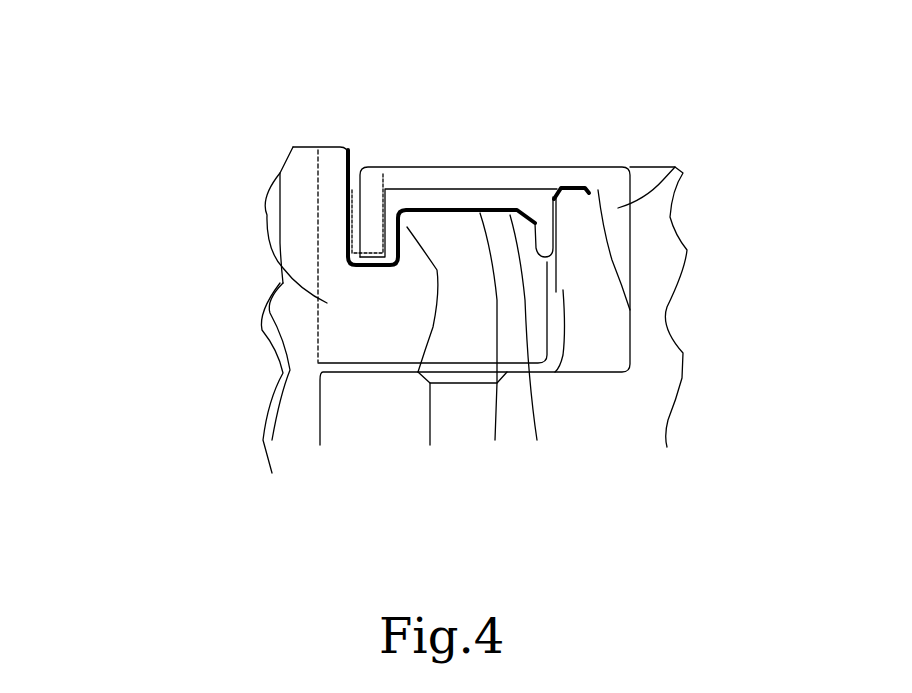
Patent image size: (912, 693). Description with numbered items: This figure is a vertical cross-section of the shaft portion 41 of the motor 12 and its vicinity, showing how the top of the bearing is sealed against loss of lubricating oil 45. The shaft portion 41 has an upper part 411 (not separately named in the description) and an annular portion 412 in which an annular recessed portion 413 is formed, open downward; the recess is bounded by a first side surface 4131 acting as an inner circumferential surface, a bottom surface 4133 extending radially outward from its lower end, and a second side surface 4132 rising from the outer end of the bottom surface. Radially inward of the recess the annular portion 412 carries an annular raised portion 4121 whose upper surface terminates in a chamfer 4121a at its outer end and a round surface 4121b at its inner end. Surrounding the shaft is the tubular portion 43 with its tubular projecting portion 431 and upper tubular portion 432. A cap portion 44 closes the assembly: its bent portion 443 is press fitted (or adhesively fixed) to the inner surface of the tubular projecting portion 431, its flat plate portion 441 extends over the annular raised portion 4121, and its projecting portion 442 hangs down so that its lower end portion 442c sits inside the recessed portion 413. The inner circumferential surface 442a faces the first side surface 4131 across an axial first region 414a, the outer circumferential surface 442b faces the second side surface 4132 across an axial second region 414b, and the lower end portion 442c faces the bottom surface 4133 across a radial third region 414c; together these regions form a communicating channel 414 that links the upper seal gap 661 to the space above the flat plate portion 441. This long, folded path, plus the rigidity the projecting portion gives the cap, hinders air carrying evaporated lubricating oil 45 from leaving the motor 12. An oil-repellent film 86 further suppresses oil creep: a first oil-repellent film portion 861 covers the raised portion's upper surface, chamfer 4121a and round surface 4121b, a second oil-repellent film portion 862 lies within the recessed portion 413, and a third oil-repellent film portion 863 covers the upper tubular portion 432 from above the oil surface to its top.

The motor 12 is at (181, 40).
The shaft portion 41 is at (250, 73).
The housing body portion 411 is at (297, 180).
The annular portion 412 is at (380, 277).
The recessed portion 413 is at (293, 496).
The communicating channel 414 is at (127, 183).
The first region 414a is at (348, 187).
The second region 414b is at (398, 167).
The third region 414c is at (380, 274).
The first side surface 4131 is at (327, 207).
The second side surface 4132 is at (382, 320).
The bottom surface 4133 is at (383, 272).
The annular raised portion 4121 is at (463, 303).
The chamfer 4121a is at (553, 170).
The round surface 4121b is at (407, 222).
The tubular portion 43 is at (852, 251).
The tubular projecting portion 431 is at (657, 267).
The upper tubular portion 432 is at (590, 337).
The cap portion 44 is at (520, 63).
The flat plate portion 441 is at (473, 173).
The projecting portion 442 is at (432, 35).
The inner circumferential surface 442a is at (365, 165).
The outer circumferential surface 442b is at (396, 226).
The lower end portion 442c is at (365, 264).
The bent portion 443 is at (673, 168).
The lubricating oil 45 is at (553, 293).
The oil-repellent film 86 is at (495, 440).
The first oil-repellent film portion 861 is at (567, 478).
The second oil-repellent film portion 862 is at (348, 222).
The third oil-repellent film portion 863 is at (570, 193).
The upper seal gap 661 is at (557, 231).